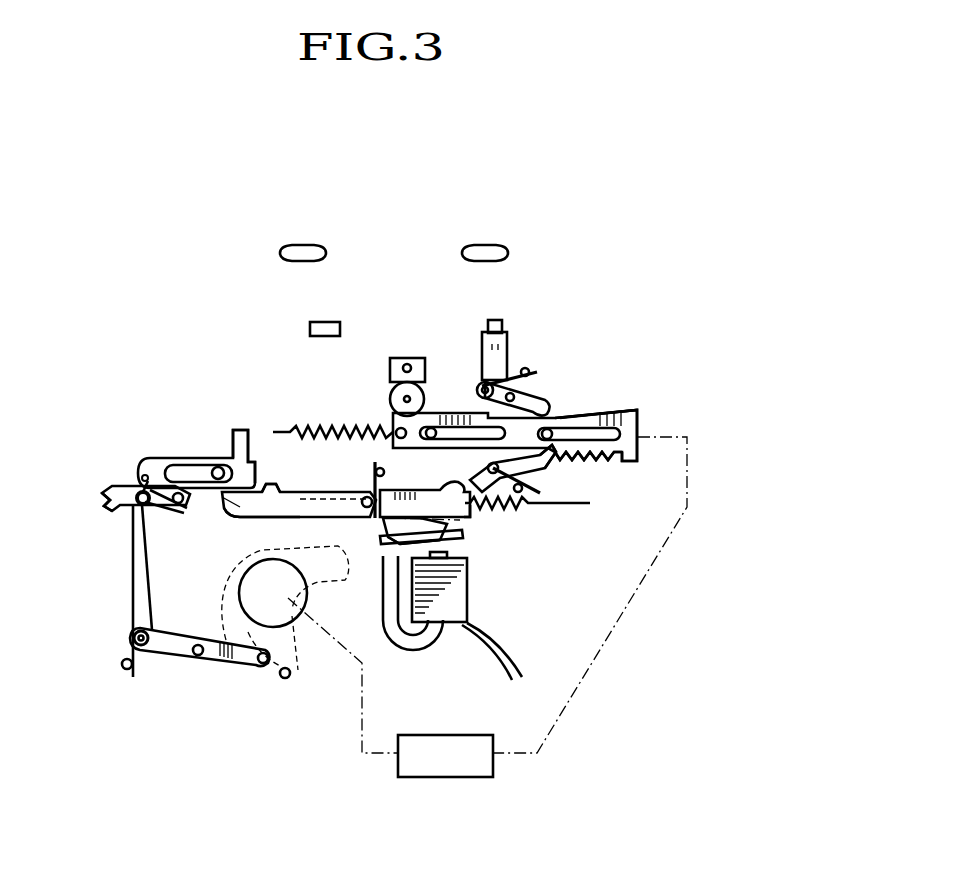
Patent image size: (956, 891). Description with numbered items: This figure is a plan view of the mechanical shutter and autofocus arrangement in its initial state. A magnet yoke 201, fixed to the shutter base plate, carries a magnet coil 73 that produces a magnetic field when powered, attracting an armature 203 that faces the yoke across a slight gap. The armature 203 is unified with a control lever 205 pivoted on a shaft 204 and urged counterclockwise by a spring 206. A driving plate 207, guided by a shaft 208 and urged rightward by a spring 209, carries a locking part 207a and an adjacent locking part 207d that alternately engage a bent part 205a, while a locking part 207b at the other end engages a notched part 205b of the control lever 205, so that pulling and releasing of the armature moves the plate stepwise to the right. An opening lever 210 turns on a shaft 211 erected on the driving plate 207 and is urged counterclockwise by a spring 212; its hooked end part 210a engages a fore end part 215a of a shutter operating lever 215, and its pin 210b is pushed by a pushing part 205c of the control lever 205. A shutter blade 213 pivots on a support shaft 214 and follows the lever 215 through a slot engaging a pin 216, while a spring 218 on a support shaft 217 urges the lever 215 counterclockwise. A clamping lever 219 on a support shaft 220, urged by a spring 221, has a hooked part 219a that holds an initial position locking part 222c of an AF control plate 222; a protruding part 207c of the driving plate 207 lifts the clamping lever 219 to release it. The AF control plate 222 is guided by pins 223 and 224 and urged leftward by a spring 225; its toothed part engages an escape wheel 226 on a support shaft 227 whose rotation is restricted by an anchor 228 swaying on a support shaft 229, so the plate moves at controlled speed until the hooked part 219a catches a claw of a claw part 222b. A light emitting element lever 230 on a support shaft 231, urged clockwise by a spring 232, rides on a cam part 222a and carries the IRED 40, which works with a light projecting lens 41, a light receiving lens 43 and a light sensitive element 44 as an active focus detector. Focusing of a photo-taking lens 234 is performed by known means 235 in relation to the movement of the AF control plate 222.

The IRED light emitter element 40 is at (499, 321).
The light projecting lens 41 is at (495, 245).
The light receiving lens 43 is at (303, 245).
The light sensitive element 44 is at (312, 322).
The magnet coil 73 is at (450, 610).
The magnet yoke 201 is at (403, 645).
The armature 203 is at (403, 565).
The shaft 204 is at (378, 520).
The control lever 205 is at (338, 492).
The bent part 205a is at (472, 516).
The notched part 205b is at (272, 486).
The pushing part 205c is at (241, 500).
The spring 206 is at (380, 522).
The driving plate 207 is at (241, 430).
The locking part 207a is at (460, 540).
The locking part 207b is at (256, 465).
The protruding part 207c is at (450, 484).
The locking part 207d is at (450, 548).
The shaft 208 is at (218, 468).
The spring 209 is at (555, 507).
The opening lever 210 is at (105, 490).
The hooked end part 210a is at (105, 506).
The pin 210b is at (177, 492).
The shaft 211 is at (144, 476).
The spring 212 is at (150, 505).
The shutter blade 213 is at (298, 660).
The support shaft 214 is at (286, 680).
The shutter operating lever 215 is at (233, 658).
The fore end part 215a is at (134, 525).
The pin 216 is at (262, 665).
The support shaft 217 is at (150, 648).
The spring 218 is at (133, 648).
The clamping lever 219 is at (540, 475).
The hooked part 219a is at (553, 462).
The support shaft 220 is at (477, 391).
The spring 221 is at (530, 490).
The AF control plate 222 is at (637, 420).
The cam part 222a is at (618, 408).
The claw part 222b is at (650, 437).
The initial position locking part 222c is at (605, 462).
The pin 223 is at (549, 430).
The pin 224 is at (430, 420).
The spring 225 is at (312, 430).
The escape wheel 226 is at (391, 392).
The support shaft 227 is at (404, 399).
The anchor 228 is at (400, 360).
The support shaft 229 is at (407, 364).
The light emitting element lever 230 is at (530, 386).
The support shaft 231 is at (483, 386).
The spring 232 is at (515, 378).
The photo-taking lens 234 is at (260, 603).
The known means 235 is at (448, 770).